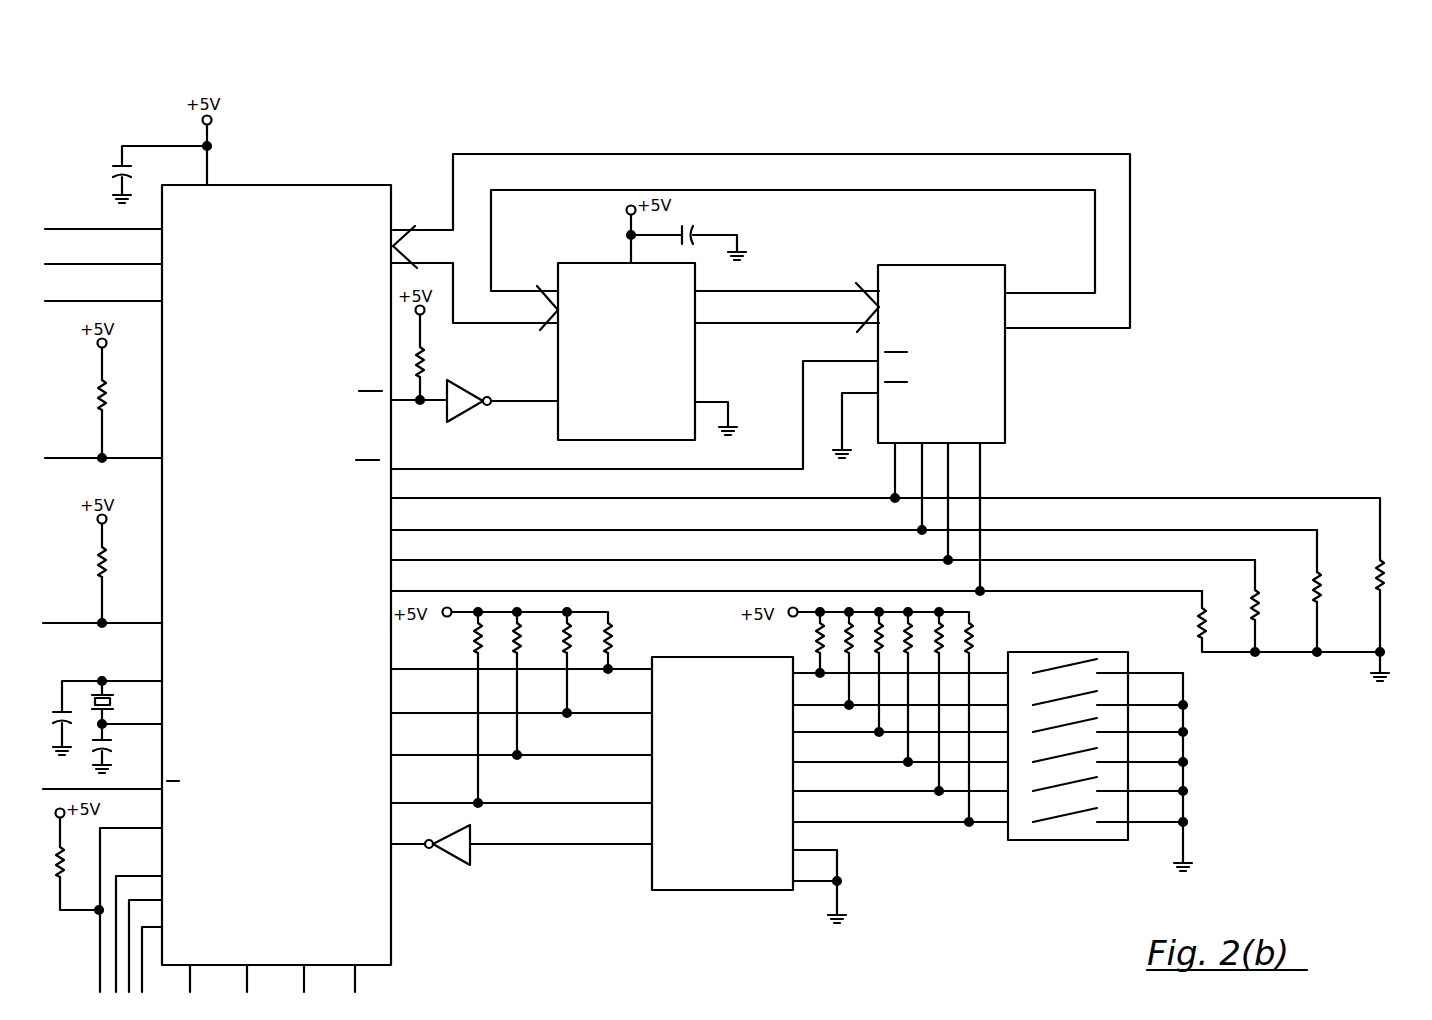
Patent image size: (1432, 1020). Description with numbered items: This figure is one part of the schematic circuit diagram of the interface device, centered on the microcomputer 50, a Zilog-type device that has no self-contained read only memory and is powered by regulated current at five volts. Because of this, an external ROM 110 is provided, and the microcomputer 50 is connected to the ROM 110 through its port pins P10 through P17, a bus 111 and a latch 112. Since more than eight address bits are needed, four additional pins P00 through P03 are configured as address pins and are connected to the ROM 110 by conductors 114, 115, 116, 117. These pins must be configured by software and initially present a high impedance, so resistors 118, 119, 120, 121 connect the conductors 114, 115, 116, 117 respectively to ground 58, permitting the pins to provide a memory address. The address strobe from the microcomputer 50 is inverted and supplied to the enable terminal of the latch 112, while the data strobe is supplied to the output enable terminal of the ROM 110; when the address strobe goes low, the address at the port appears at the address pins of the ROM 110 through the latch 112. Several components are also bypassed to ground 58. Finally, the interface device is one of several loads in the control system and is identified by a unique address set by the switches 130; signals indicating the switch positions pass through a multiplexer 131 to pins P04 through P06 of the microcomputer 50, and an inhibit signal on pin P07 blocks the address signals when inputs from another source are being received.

The microcomputer 50 is at (325, 185).
The ground 58 is at (740, 249).
The external ROM 110 is at (1005, 410).
The bus 111 is at (597, 153).
The latch 112 is at (695, 360).
The conductor 114 is at (603, 497).
The conductor 115 is at (605, 529).
The conductor 116 is at (605, 559).
The conductor 117 is at (605, 590).
The resistor 118 is at (1383, 578).
The resistor 119 is at (1320, 590).
The resistor 120 is at (1258, 608).
The resistor 121 is at (1205, 625).
The switches 130 is at (1070, 652).
The multiplexer 131 is at (717, 890).